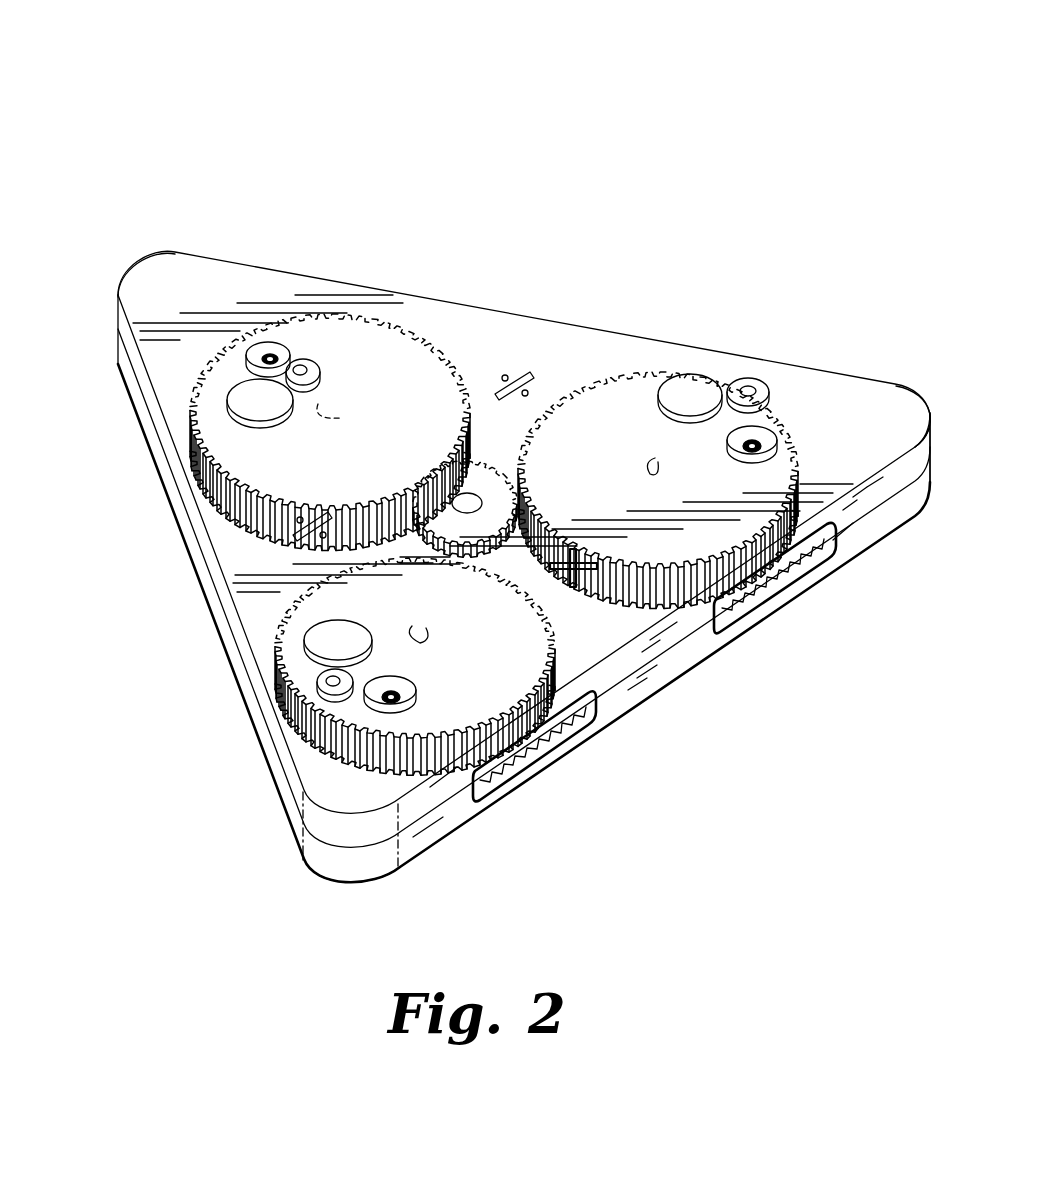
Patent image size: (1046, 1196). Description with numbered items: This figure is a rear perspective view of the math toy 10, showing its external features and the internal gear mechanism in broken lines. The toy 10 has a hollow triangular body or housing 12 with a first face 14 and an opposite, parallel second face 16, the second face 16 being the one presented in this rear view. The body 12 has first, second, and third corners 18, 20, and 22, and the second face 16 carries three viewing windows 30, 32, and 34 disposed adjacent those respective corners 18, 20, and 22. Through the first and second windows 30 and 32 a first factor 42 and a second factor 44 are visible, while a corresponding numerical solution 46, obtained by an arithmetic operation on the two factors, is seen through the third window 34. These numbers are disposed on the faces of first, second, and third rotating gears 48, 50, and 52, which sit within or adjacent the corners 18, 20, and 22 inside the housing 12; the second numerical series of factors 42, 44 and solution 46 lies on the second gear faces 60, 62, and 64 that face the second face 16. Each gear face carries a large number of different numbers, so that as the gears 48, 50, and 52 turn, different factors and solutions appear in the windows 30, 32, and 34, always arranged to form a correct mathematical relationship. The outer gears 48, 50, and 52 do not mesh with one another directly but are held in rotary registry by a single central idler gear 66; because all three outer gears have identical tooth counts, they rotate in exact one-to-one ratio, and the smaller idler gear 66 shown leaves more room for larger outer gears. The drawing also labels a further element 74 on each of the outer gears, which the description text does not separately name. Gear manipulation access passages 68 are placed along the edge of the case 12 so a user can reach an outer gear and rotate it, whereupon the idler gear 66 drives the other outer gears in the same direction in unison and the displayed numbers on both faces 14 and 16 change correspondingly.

The math toy 10 is at (447, 78).
The triangular body 12 is at (505, 312).
The first face 14 is at (285, 379).
The second face 16 is at (522, 359).
The first corner 18 is at (920, 385).
The second corner 20 is at (365, 882).
The third corner 22 is at (122, 268).
The first window 30 is at (691, 469).
The second window 32 is at (407, 678).
The third window 34 is at (260, 340).
The first factor 42 is at (755, 425).
The second factor 44 is at (432, 675).
The numerical solution 46 is at (285, 366).
The first rotating gear 48 is at (686, 469).
The second rotating gear 50 is at (432, 666).
The third rotating gear 52 is at (197, 462).
The second face of first gear 60 is at (712, 540).
The second face of second gear 62 is at (533, 625).
The second face of third gear 64 is at (288, 532).
The central idler gear 66 is at (490, 462).
The gear manipulation access passage 68 is at (560, 740).
The cam handles 74 is at (700, 383).